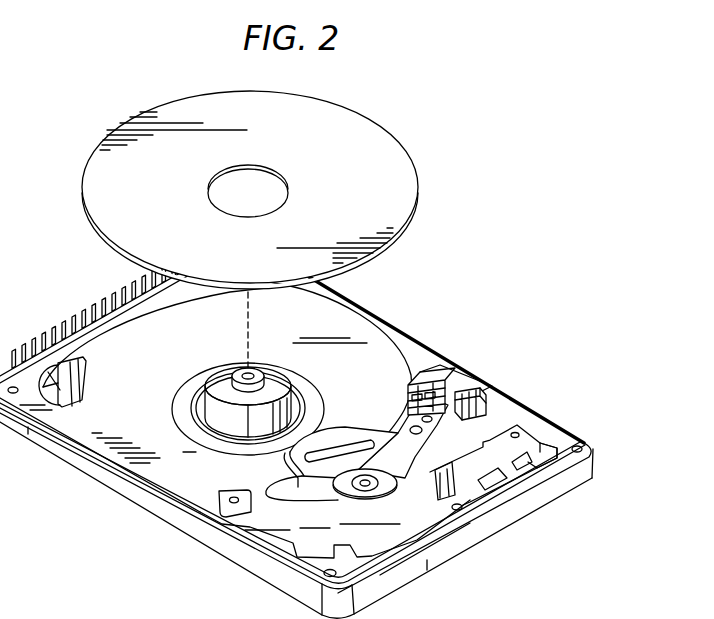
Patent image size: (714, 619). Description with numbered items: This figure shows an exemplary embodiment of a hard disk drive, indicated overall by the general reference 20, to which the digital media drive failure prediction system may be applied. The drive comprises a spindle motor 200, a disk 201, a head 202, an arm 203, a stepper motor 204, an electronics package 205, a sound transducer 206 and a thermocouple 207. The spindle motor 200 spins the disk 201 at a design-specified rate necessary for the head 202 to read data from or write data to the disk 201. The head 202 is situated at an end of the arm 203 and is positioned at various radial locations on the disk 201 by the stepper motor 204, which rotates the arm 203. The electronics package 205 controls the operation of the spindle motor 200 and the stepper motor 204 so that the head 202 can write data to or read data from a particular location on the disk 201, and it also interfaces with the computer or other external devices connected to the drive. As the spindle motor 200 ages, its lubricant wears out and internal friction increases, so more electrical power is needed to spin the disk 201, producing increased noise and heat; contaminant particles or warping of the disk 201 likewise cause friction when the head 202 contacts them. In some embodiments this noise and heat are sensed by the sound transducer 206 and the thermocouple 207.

The hard disk drive 20 is at (533, 222).
The spindle motor 200 is at (243, 443).
The disk 201 is at (373, 120).
The head 202 is at (453, 390).
The arm 203 is at (390, 447).
The stepper motor 204 is at (266, 496).
The electronics package 205 is at (417, 522).
The sound transducer 206 is at (500, 483).
The thermocouple 207 is at (543, 470).